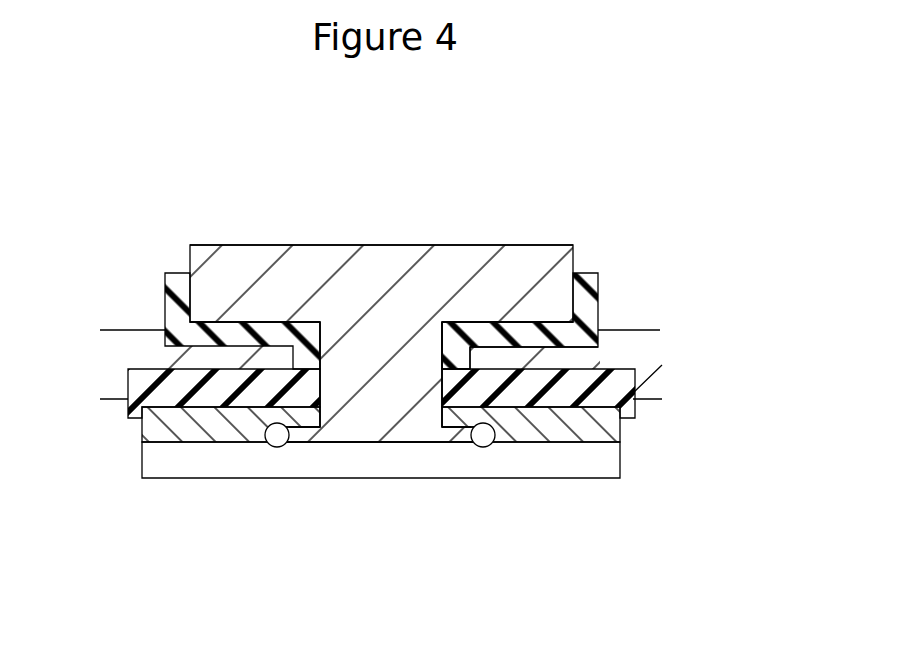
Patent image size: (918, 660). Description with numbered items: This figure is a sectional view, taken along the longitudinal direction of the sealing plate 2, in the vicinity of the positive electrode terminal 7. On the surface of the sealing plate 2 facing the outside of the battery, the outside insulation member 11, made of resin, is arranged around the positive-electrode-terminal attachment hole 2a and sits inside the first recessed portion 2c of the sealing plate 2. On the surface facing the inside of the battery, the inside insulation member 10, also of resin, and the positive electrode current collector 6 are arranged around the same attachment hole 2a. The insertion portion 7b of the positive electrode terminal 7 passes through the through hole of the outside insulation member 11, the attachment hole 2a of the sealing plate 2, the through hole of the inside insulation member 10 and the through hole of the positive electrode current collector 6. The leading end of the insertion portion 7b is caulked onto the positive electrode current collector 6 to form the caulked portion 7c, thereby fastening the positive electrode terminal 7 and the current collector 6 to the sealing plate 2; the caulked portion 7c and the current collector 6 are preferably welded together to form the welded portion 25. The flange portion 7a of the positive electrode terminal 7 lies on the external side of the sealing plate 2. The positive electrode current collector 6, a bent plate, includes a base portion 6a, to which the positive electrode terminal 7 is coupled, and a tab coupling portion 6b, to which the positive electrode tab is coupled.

The positive electrode terminal 7 is at (416, 233).
The flange portion 7a is at (232, 268).
The insertion portion 7b is at (385, 390).
The caulked portion 7c is at (297, 436).
The sealing plate 2 is at (625, 347).
The positive-electrode-terminal attachment hole 2a is at (480, 362).
The first recessed portion 2c is at (530, 347).
The outside insulation member 11 is at (175, 311).
The inside insulation member 10 is at (620, 383).
The positive electrode current collector 6 is at (395, 515).
The base portion 6a is at (585, 428).
The tab coupling portion 6b is at (545, 458).
The welded portion 25 is at (277, 437).